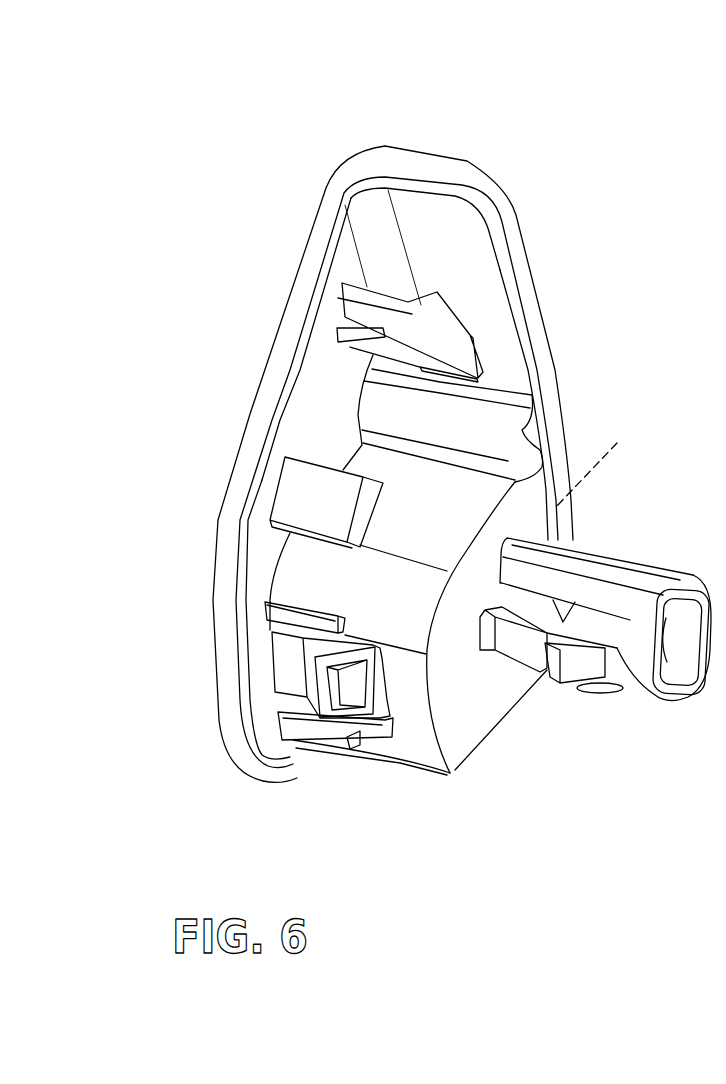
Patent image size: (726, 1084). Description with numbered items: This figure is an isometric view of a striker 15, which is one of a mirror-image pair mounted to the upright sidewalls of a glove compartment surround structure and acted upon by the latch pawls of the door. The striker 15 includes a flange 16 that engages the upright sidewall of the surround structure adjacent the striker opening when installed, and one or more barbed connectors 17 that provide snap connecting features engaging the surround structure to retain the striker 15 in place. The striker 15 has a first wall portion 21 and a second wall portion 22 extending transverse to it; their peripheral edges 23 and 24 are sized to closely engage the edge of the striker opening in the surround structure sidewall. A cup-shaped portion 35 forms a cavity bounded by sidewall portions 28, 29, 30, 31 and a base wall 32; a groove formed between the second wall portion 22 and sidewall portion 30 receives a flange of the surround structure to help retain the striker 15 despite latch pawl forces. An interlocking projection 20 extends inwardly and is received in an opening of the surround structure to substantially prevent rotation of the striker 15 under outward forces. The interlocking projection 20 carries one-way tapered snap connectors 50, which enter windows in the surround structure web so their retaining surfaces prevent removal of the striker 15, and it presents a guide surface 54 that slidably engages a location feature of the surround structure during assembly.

The striker 15 is at (378, 438).
The flange 16 is at (265, 368).
The barbed connectors 17 is at (413, 275).
The interlocking projection 20 is at (605, 612).
The first wall portion 21 is at (297, 443).
The second wall portion 22 is at (447, 227).
The peripheral edge 23 is at (227, 527).
The peripheral edge 24 is at (537, 307).
The sidewall portion 28 is at (386, 559).
The sidewall portion 29 is at (447, 491).
The sidewall portion 30 is at (597, 462).
The sidewall portion 31 is at (488, 753).
The base wall 32 is at (493, 682).
The cup-shaped portion 35 is at (500, 730).
The one-way tapered snap connectors 50 is at (573, 663).
The guide surface 54 is at (628, 572).